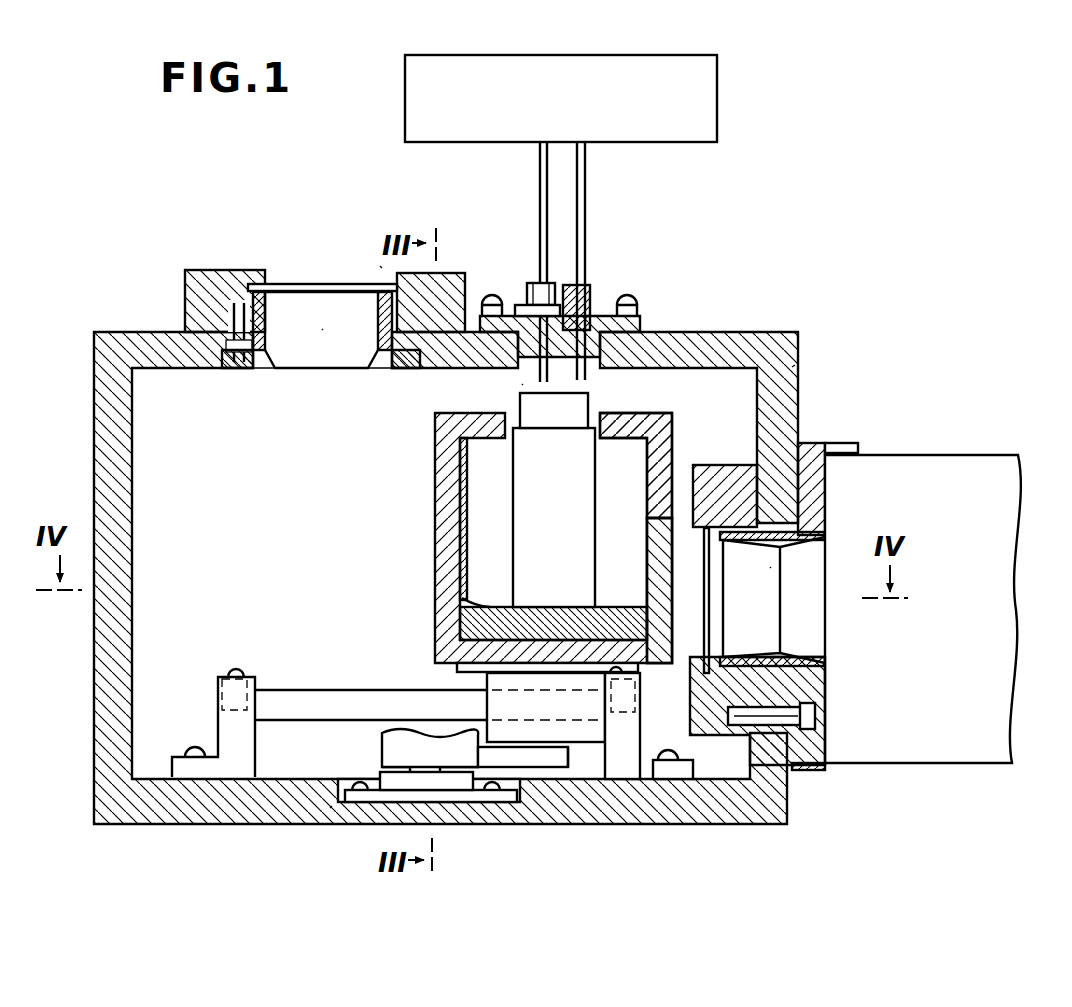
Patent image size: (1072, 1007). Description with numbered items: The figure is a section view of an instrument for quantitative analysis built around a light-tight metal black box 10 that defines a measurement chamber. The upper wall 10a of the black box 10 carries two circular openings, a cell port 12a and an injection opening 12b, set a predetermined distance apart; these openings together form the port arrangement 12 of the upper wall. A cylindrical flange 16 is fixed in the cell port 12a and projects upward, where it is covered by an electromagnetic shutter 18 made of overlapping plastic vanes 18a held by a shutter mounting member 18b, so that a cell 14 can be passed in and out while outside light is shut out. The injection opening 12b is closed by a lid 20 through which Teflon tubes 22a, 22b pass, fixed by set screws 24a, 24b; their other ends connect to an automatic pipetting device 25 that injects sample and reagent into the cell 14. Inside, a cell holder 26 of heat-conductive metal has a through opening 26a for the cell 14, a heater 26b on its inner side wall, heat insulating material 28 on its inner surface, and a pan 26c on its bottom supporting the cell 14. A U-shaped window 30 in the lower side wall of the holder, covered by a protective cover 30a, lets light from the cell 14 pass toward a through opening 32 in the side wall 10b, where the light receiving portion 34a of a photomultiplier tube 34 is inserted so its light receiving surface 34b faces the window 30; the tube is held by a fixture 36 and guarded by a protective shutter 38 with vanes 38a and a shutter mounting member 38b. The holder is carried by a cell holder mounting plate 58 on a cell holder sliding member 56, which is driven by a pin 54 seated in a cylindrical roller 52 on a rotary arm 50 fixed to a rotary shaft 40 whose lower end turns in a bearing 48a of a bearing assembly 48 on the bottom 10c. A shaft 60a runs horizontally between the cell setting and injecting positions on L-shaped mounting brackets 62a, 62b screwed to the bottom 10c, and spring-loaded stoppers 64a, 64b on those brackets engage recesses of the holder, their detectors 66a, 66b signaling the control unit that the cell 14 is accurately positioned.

The black box 10 is at (135, 322).
The upper wall 10a is at (178, 333).
The side wall 10b is at (792, 367).
The bottom 10c is at (330, 808).
The sample inlet port 12 is at (374, 352).
The cell port 12a is at (322, 330).
The injection opening 12b is at (522, 385).
The cell 14 is at (658, 432).
The cylindrical flange 16 is at (402, 370).
The electromagnetic shutter 18 is at (380, 266).
The vanes 18a is at (302, 290).
The shutter mounting member 18b is at (223, 275).
The lid 20 is at (600, 322).
The Teflon tube 22a is at (540, 180).
The Teflon tube 22b is at (586, 180).
The set screw 24a is at (527, 300).
The set screw 24b is at (595, 300).
The automatic pipetting device 25 is at (718, 122).
The cell holder 26 is at (690, 428).
The through opening 26a is at (600, 403).
The heater 26b is at (462, 465).
The pan 26c is at (470, 603).
The heat insulating material 28 is at (436, 512).
The window 30 is at (660, 575).
The protective cover 30a is at (690, 500).
The through opening 32 is at (790, 657).
The photomultiplier tube 34 is at (980, 455).
The light receiving portion 34a is at (770, 567).
The light receiving surface 34b is at (722, 632).
The fixture 36 is at (840, 452).
The protective shutter 38 is at (740, 462).
The vanes 38a is at (715, 605).
The shutter mounting member 38b is at (745, 488).
The rotary shaft 40 is at (442, 782).
The bearing assembly 48 is at (372, 797).
The bearing 48a is at (385, 752).
The rotary arm 50 is at (478, 768).
The cylindrical roller 52 is at (568, 757).
The pin 54 is at (545, 768).
The cell holder sliding member 56 is at (500, 682).
The cell holder mounting plate 58 is at (462, 667).
The shaft 60a is at (302, 700).
The mounting bracket 62a is at (183, 772).
The mounting bracket 62b is at (680, 772).
The stopper 64a is at (236, 672).
The stopper 64b is at (632, 720).
The detector 66a is at (222, 690).
The detector 66b is at (634, 716).